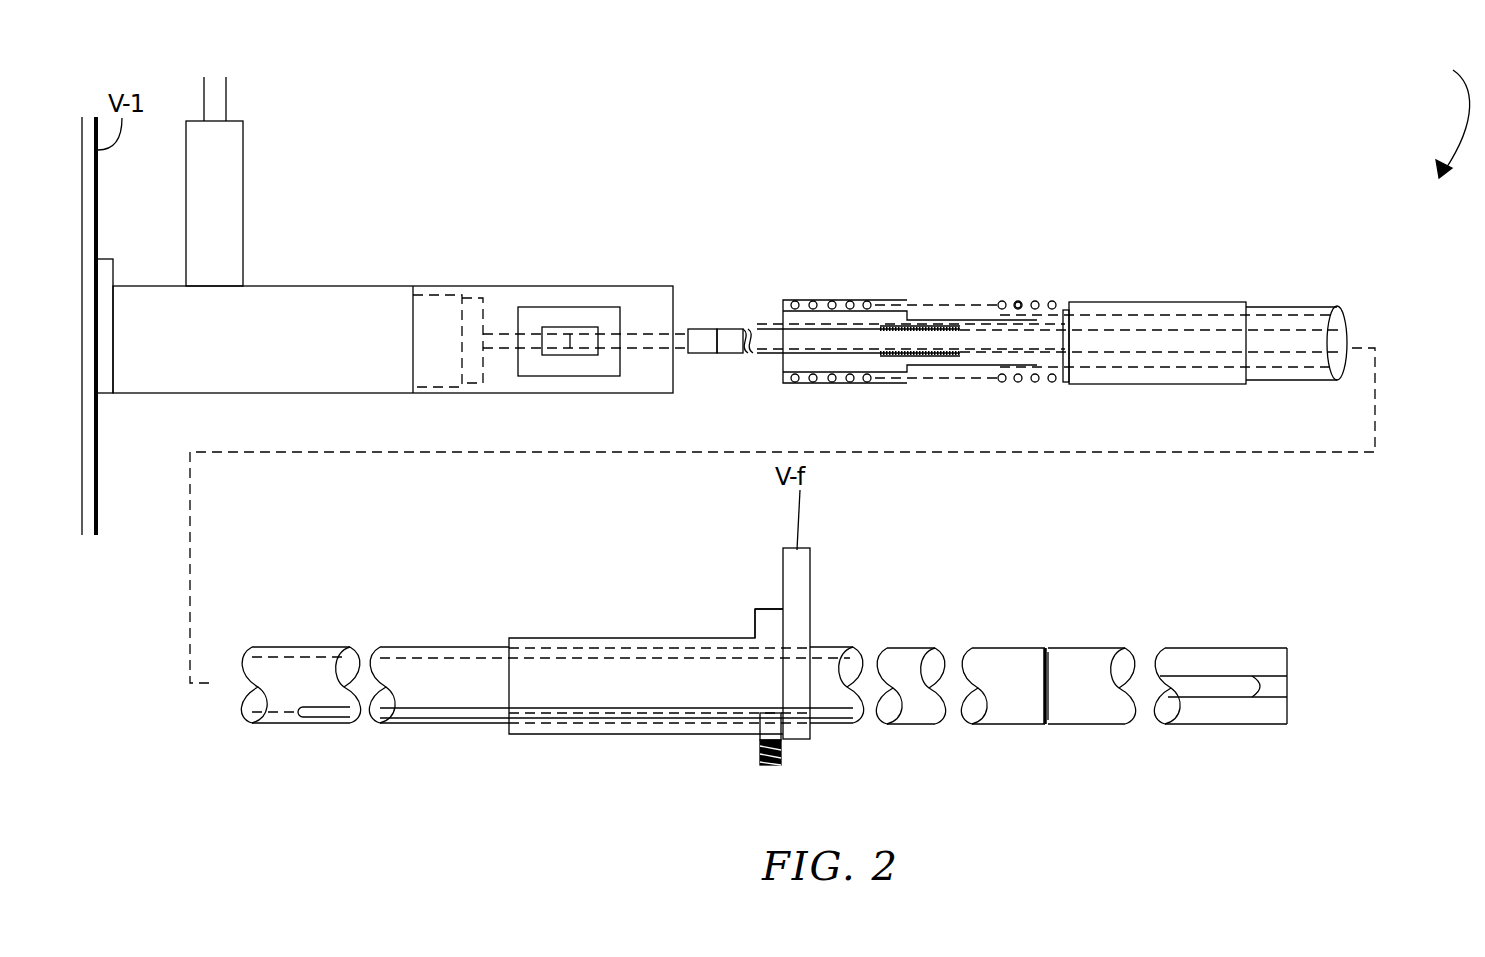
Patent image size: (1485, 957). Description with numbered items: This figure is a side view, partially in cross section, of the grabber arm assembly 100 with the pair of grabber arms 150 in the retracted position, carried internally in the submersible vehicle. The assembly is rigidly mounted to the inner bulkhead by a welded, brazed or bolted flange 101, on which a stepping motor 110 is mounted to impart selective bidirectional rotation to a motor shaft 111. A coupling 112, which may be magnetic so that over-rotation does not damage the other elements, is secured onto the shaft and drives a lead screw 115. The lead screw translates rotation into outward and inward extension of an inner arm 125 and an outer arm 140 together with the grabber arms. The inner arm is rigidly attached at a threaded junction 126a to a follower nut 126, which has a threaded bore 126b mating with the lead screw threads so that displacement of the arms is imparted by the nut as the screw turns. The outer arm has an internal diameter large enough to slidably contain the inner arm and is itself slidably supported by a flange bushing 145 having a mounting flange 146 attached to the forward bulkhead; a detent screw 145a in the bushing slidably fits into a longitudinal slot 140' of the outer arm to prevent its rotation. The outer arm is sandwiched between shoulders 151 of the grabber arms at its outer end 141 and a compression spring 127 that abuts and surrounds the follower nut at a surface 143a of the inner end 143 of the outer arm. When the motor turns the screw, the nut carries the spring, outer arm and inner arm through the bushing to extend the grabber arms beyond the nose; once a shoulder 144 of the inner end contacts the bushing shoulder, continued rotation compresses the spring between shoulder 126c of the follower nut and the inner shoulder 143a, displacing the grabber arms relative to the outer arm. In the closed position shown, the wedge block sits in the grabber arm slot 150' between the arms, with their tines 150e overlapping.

The grabber arm assembly 100 is at (1436, 119).
The flange 101 is at (110, 258).
The stepping motor 110 is at (287, 286).
The motor shaft 111 is at (497, 333).
The coupling 112 is at (568, 327).
The lead screw 115 is at (728, 330).
The inner arm 125 is at (1050, 305).
The follower nut 126 is at (772, 314).
The threaded junction 126a is at (946, 308).
The threaded bore 126b is at (918, 350).
The shoulder of follower nut 126c is at (795, 303).
The compression spring 127 is at (1018, 300).
The inner end of outer arm 143 is at (1210, 300).
The inner shoulder 143a is at (1065, 310).
The shoulder of outer arm 144 is at (1262, 308).
The outer arm 140 is at (625, 681).
The longitudinal slot 140' is at (575, 754).
The outer end of outer arm 141 is at (1022, 727).
The flange bushing 145 is at (600, 638).
The detent screw 145a is at (488, 636).
The mounting flange 146 is at (760, 608).
The grabber arms 150 is at (1220, 657).
The grabber arm slot 150' is at (1223, 731).
The tines 150e is at (1277, 688).
The shoulders of grabber arms 151 is at (1048, 650).